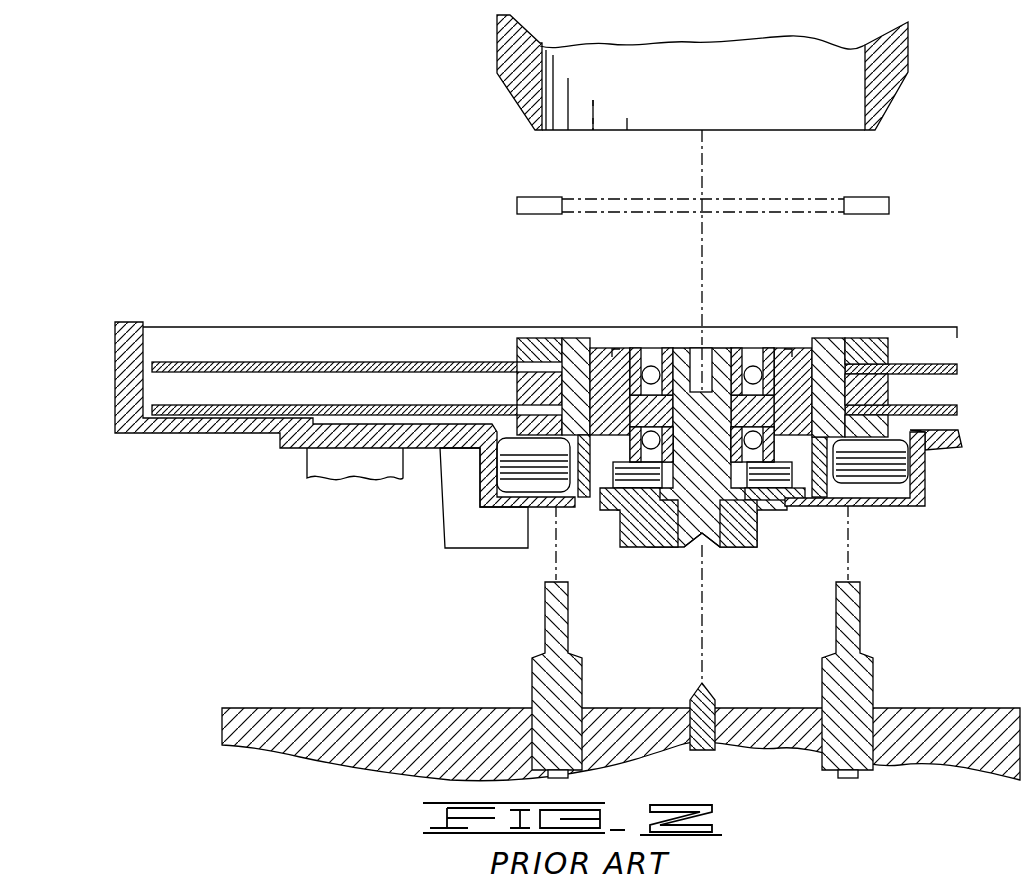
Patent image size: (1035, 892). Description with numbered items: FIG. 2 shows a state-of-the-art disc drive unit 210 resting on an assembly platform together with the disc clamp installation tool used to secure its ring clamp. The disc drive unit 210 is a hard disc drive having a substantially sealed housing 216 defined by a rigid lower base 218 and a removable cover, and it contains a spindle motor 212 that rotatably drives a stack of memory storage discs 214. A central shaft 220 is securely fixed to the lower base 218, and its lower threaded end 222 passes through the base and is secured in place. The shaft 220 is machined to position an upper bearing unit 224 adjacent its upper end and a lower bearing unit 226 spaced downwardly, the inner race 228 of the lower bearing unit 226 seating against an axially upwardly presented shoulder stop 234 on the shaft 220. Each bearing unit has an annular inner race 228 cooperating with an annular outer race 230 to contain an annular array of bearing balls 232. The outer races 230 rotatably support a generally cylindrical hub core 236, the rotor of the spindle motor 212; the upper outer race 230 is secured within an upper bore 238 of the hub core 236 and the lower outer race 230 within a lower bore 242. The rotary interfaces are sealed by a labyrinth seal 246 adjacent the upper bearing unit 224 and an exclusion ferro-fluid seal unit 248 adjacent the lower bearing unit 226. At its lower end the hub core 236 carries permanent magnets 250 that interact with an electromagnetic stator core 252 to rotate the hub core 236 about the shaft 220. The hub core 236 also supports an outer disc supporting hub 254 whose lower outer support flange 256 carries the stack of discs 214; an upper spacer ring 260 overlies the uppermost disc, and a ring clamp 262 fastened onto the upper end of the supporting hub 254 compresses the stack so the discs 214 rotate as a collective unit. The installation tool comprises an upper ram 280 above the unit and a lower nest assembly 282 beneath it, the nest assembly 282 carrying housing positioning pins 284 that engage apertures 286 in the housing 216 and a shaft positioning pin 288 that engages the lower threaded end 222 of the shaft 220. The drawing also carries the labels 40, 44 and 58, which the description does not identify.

The disc drive unit 210 is at (330, 275).
The spindle motor 212 is at (525, 548).
The memory storage discs 214 is at (210, 362).
The housing 216 is at (112, 358).
The lower base 218 is at (935, 505).
The central shaft 220 is at (732, 347).
The lower threaded end 222 is at (720, 542).
The upper bearing unit 224 is at (650, 352).
The lower bearing unit 226 is at (650, 455).
The inner race 228 is at (672, 347).
The outer race 230 is at (638, 345).
The bearing balls 232 is at (757, 352).
The shoulder stop 234 is at (660, 530).
The hub core 236 is at (585, 345).
The upper bore 238 is at (608, 347).
The lower bore 242 is at (770, 492).
The labyrinth seal 246 is at (795, 350).
The exclusion ferro-fluid seal unit 248 is at (790, 500).
The permanent magnets 250 is at (585, 497).
The electromagnetic stator core 252 is at (500, 482).
The outer disc supporting hub 254 is at (835, 338).
The lower outer support flange 256 is at (930, 450).
The upper spacer ring 260 is at (888, 358).
The ring clamp 262 is at (850, 195).
The upper ram 280 is at (908, 57).
The lower nest assembly 282 is at (365, 708).
The housing positioning pins 284 is at (545, 632).
The apertures 286 is at (850, 508).
The shaft positioning pin 288 is at (708, 700).
The lower bearing 40 is at (628, 400).
The lower collar 44 is at (742, 525).
The clamp insert 58 is at (945, 388).